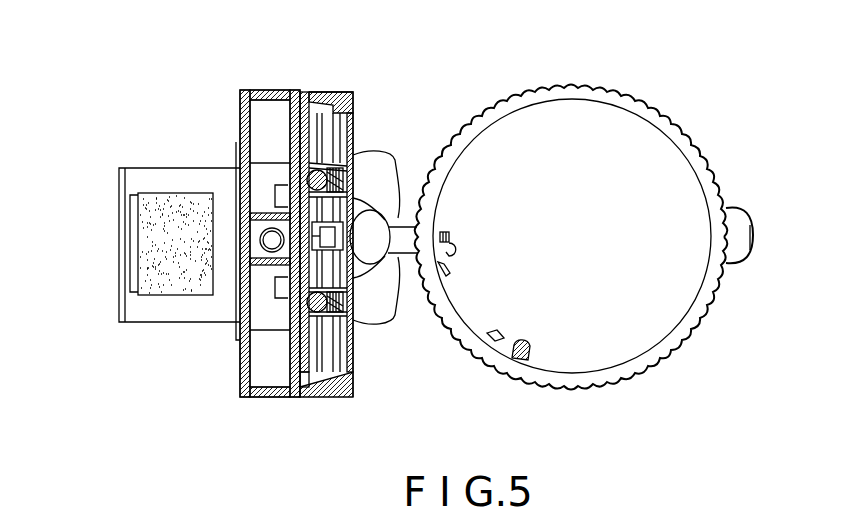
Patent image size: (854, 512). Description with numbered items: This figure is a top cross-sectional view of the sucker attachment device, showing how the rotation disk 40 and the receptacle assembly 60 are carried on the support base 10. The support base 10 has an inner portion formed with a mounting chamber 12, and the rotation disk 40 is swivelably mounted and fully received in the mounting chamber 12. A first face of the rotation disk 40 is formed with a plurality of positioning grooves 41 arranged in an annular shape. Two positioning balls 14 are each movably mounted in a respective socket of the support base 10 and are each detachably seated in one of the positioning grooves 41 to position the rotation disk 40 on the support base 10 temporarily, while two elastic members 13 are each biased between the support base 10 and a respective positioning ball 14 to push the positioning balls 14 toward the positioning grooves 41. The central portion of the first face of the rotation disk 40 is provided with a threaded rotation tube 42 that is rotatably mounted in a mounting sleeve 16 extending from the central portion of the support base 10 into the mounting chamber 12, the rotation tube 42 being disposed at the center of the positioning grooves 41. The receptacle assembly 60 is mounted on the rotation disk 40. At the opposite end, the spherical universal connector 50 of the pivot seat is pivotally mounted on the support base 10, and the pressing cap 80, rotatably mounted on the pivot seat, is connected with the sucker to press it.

The support base 10 is at (330, 94).
The mounting chamber 12 is at (308, 98).
The elastic members 13 is at (356, 158).
The positioning balls 14 is at (333, 163).
The mounting sleeve 16 is at (317, 226).
The rotation disk 40 is at (307, 378).
The positioning grooves 41 is at (307, 178).
The rotation tube 42 is at (307, 253).
The universal connector 50 is at (373, 247).
The receptacle assembly 60 is at (266, 90).
The pressing cap 80 is at (575, 120).